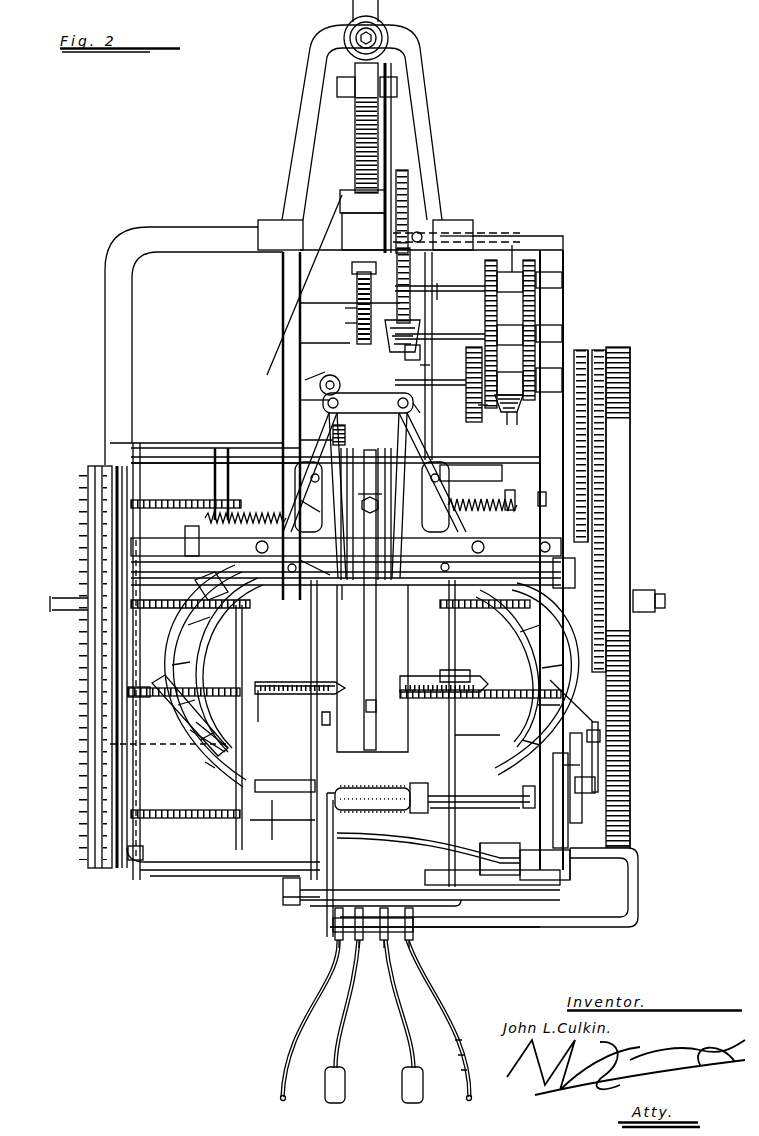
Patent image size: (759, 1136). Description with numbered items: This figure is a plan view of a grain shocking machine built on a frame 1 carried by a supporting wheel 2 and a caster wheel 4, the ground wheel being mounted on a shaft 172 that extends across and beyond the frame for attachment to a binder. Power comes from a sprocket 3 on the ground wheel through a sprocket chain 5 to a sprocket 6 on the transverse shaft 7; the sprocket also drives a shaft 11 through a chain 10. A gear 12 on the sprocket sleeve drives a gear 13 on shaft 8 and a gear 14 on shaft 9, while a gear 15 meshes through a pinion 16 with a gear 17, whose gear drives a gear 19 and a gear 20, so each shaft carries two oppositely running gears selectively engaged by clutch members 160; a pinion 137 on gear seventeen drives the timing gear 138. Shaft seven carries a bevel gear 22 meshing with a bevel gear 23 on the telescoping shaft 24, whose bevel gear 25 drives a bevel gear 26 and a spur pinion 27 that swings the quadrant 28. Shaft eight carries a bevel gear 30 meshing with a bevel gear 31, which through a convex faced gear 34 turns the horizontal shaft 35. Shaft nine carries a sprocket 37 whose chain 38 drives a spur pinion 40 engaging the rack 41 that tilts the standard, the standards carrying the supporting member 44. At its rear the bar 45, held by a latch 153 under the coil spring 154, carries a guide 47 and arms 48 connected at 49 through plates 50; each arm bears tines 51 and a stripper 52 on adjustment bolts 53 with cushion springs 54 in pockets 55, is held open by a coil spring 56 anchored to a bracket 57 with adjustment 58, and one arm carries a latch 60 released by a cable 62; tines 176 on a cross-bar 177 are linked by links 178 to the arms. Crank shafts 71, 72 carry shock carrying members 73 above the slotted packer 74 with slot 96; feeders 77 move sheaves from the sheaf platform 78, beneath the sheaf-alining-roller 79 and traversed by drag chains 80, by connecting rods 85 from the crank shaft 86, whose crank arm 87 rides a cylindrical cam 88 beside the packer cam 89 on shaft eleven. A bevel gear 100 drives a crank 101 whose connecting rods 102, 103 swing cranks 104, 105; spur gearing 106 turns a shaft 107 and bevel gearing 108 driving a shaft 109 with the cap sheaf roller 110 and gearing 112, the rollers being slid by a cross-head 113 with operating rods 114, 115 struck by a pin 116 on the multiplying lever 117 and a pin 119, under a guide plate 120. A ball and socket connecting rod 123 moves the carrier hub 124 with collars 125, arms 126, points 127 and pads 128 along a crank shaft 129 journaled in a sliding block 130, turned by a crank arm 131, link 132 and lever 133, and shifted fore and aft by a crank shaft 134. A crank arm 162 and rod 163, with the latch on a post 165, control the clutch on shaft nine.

The frame 1 is at (160, 240).
The supporting wheel 2 is at (630, 489).
The sprocket 3 is at (603, 673).
The caster wheel 4 is at (378, 10).
The sprocket chain 5 is at (602, 510).
The sprocket 6 is at (630, 347).
The shaft 7 is at (417, 369).
The shaft 8 is at (440, 325).
The shaft 9 is at (442, 287).
The chain 10 is at (593, 462).
The shaft 11 is at (165, 522).
The gear 12 is at (530, 368).
The gear 13 is at (545, 318).
The gear 14 is at (536, 270).
The gear 15 is at (597, 353).
The pinion 16 is at (540, 402).
The gear 17 is at (468, 365).
The gear 19 is at (484, 325).
The gear 20 is at (484, 277).
The bevel gear 22 is at (333, 375).
The bevel gear 23 is at (305, 380).
The telescoping shaft 24 is at (300, 400).
The bevel gear 25 is at (305, 433).
The bevel gear 26 is at (305, 441).
The spur pinion 27 is at (368, 403).
The quadrant 28 is at (345, 490).
The bevel gear 30 is at (415, 350).
The bevel gear 31 is at (345, 308).
The convex faced gear 34 is at (345, 323).
The horizontal shaft 35 is at (393, 475).
The sprocket 37 is at (411, 294).
The chain 38 is at (410, 263).
The spur pinion 40 is at (407, 192).
The rack 41 is at (393, 132).
The supporting member 44 is at (352, 290).
The bar 45 is at (360, 462).
The guide 47 is at (200, 582).
The arm 48 is at (202, 758).
The connection 49 is at (415, 408).
The plate 50 is at (296, 388).
The tine 51 is at (208, 618).
The stripper 52 is at (203, 656).
The adjustment bolt 53 is at (150, 688).
The cushion spring 54 is at (208, 720).
The pocket 55 is at (163, 700).
The coil spring 56 is at (255, 516).
The bracket 57 is at (185, 542).
The adjustment means 58 is at (180, 520).
The latch 60 is at (315, 570).
The cord or cable 62 is at (393, 494).
The crank shaft 71 is at (322, 718).
The crank shaft 72 is at (455, 716).
The shock carrying member 73 is at (283, 684).
The packer 74 is at (358, 750).
The feeder 77 is at (262, 700).
The sheaf platform 78 is at (165, 843).
The sheaf-alining-roller 79 is at (87, 538).
The drag chain 80 is at (173, 812).
The connecting rod 85 is at (278, 786).
The crank shaft 86 is at (455, 668).
The crank arm 87 is at (462, 505).
The cylindrical cam 88 is at (510, 494).
The cam 89 is at (462, 488).
The slot 96 is at (381, 712).
The bevel gear 100 is at (538, 500).
The crank 101 is at (556, 878).
The connecting rod 102 is at (478, 902).
The connecting rod 103 is at (308, 906).
The crank 104 is at (427, 880).
The crank 105 is at (280, 888).
The spur gearing 106 is at (575, 567).
The shaft 107 is at (555, 832).
The bevel gearing 108 is at (580, 773).
The shaft 109 is at (470, 790).
The cap sheaf feeding and pressing roller 110 is at (352, 790).
The gearing 112 is at (528, 804).
The cross-head 113 is at (420, 816).
The operating rod 114 is at (462, 848).
The operating rod 115 is at (368, 832).
The pin 116 is at (492, 866).
The multiplying lever 117 is at (483, 890).
The pin 119 is at (273, 816).
The guide plate 120 is at (440, 838).
The ball and socket connecting rod 123 is at (455, 908).
The hub 124 is at (373, 945).
The collar 125 is at (335, 938).
The tine or arm 126 is at (430, 990).
The tine or point 127 is at (290, 1065).
The pad 128 is at (347, 1083).
The crank shaft 129 is at (527, 930).
The sliding block 130 is at (597, 780).
The crank arm 131 is at (583, 758).
The link 132 is at (601, 733).
The lever 133 is at (605, 698).
The crank shaft 134 is at (470, 740).
The pinion 137 is at (467, 380).
The gear 138 is at (475, 407).
The latch 153 is at (300, 343).
The coil spring 154 is at (345, 303).
The clutch member 160 is at (512, 262).
The crank arm 162 is at (482, 232).
The rod 163 is at (410, 230).
The post 165 is at (376, 600).
The shaft 172 is at (52, 598).
The tine 176 is at (342, 588).
The cross-bar 177 is at (268, 582).
The link 178 is at (300, 508).